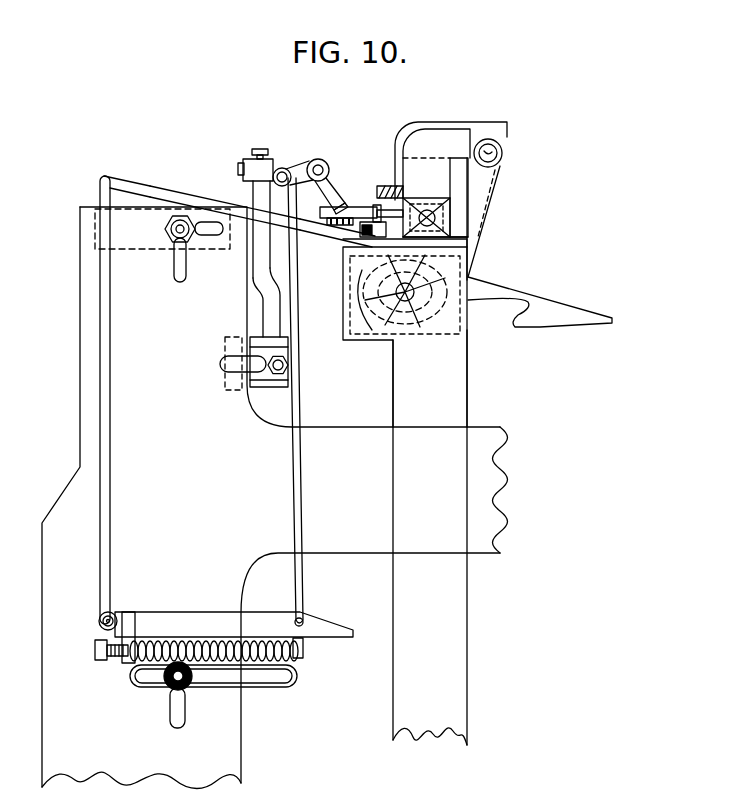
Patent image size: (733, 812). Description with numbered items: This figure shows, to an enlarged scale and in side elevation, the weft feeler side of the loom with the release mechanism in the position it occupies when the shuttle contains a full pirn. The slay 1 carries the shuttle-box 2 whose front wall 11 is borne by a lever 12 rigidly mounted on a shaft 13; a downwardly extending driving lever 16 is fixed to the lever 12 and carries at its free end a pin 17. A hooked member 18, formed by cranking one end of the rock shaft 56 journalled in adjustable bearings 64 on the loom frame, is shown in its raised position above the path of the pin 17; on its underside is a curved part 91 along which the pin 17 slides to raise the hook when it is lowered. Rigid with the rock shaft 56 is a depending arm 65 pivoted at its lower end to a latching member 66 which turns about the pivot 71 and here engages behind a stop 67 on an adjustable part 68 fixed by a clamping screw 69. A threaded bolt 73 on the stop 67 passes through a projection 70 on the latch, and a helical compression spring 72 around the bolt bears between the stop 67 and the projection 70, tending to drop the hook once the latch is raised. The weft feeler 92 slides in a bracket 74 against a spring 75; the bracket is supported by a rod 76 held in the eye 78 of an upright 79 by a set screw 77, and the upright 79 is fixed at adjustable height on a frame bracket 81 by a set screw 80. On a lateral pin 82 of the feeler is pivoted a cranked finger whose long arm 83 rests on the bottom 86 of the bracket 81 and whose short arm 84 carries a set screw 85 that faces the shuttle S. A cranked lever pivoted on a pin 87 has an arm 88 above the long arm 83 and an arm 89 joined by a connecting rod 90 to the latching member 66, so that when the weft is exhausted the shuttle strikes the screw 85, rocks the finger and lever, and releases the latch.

The slay 1 is at (375, 333).
The shuttle-box 2 is at (440, 185).
The shuttle S is at (452, 222).
The front wall 11 is at (392, 195).
The lever 12 is at (416, 124).
The shaft 13 is at (504, 153).
The driving lever 16 is at (475, 262).
The pin 17 is at (473, 343).
The hooked member 18 is at (563, 317).
The rock shaft 56 is at (110, 184).
The adjustable bearings 64 is at (140, 224).
The depending arm 65 is at (108, 440).
The latching member 66 is at (188, 620).
The stop 67 is at (304, 643).
The adjustable part 68 is at (282, 688).
The clamping screw 69 is at (167, 688).
The projection 70 is at (125, 648).
The pivot 71 is at (113, 612).
The helical compression spring 72 is at (153, 635).
The threaded bolt 73 is at (94, 650).
The bracket 74 is at (345, 197).
The spring 75 is at (330, 208).
The rod 76 is at (290, 166).
The set screw 77 is at (262, 150).
The eye 78 is at (243, 168).
The upright 79 is at (263, 281).
The set screw 80 is at (290, 365).
The bracket 81 is at (265, 389).
The lateral pin 82 is at (380, 186).
The long arm 83 is at (328, 226).
The short arm 84 is at (468, 243).
The set screw 85 is at (357, 249).
The bottom 86 is at (362, 233).
The pin 87 is at (318, 158).
The arm 88 is at (328, 178).
The arm 89 is at (252, 190).
The connecting rod 90 is at (295, 493).
The curved part 91 is at (418, 325).
The weft feeler 92 is at (450, 180).